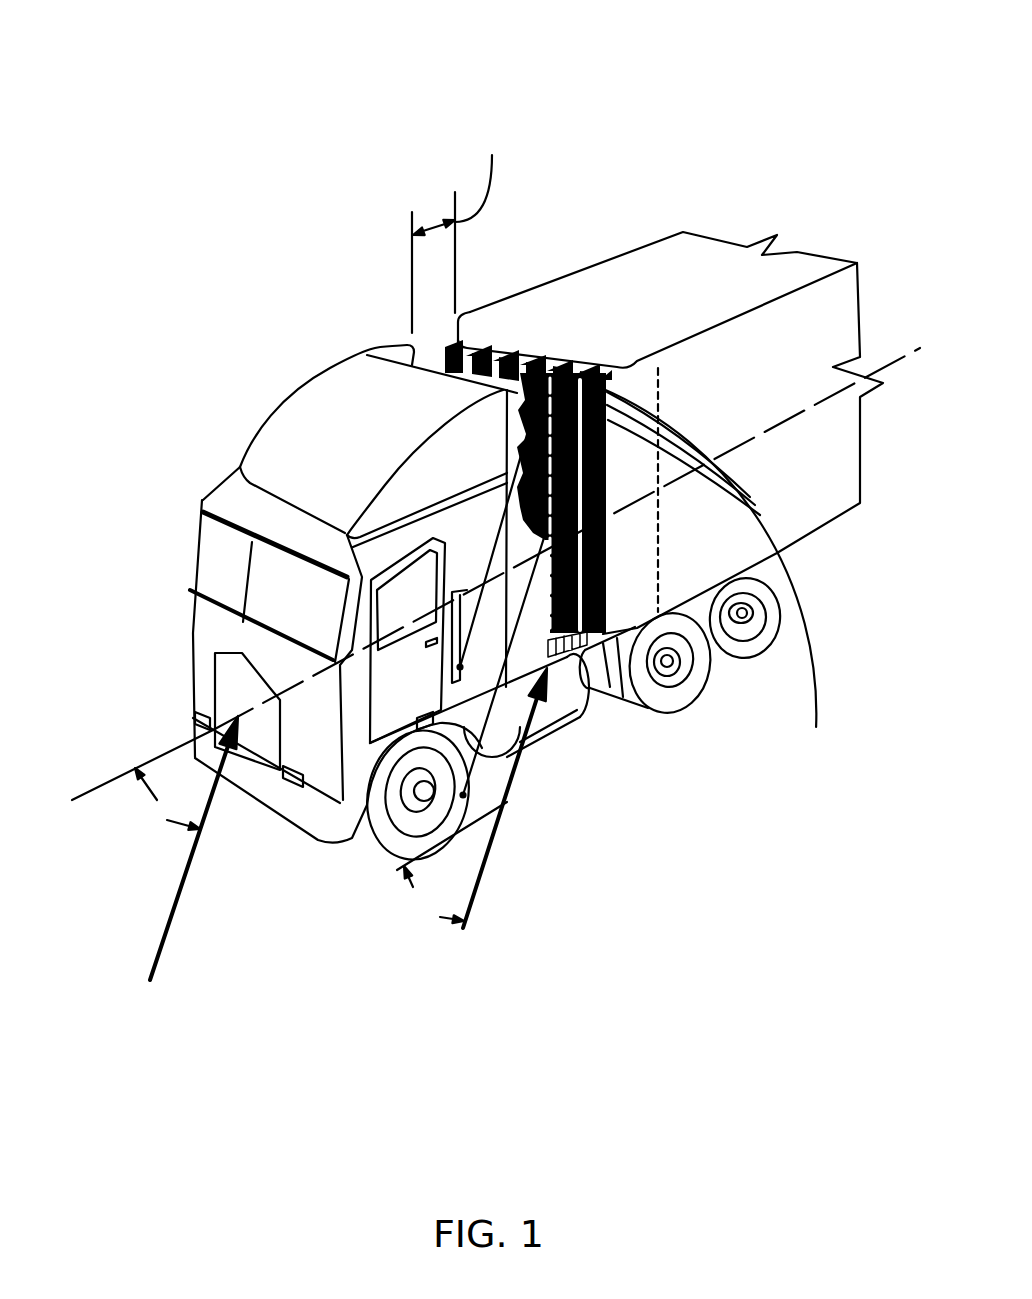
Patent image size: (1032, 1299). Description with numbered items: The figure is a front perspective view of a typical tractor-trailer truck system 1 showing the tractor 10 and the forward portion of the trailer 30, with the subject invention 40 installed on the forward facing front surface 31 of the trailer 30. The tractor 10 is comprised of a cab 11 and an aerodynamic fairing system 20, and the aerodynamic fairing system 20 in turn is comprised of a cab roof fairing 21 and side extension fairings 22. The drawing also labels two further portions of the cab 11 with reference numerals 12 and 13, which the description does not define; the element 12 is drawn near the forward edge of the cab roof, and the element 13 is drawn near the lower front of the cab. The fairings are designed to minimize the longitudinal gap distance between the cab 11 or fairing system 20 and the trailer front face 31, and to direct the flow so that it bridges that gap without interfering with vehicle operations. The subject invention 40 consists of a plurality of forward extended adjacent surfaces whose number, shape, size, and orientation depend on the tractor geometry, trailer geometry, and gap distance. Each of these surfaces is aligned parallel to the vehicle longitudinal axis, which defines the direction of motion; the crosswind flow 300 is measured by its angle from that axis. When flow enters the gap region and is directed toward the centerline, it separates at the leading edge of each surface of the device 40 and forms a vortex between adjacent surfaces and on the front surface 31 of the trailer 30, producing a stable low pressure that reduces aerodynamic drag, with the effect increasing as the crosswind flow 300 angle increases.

The tractor-trailer truck system 1 is at (601, 32).
The tractor 10 is at (74, 682).
The cab 11 is at (99, 727).
The cab roof edge 12 is at (230, 503).
The windshield 13 is at (213, 627).
The aerodynamic fairing system 20 is at (243, 262).
The cab roof fairing 21 is at (310, 450).
The side extension fairings 22 is at (389, 347).
The trailer 30 is at (801, 154).
The forward facing front surface 31 is at (476, 340).
The subject invention 40 is at (712, 576).
The crosswind flow 300 is at (507, 801).